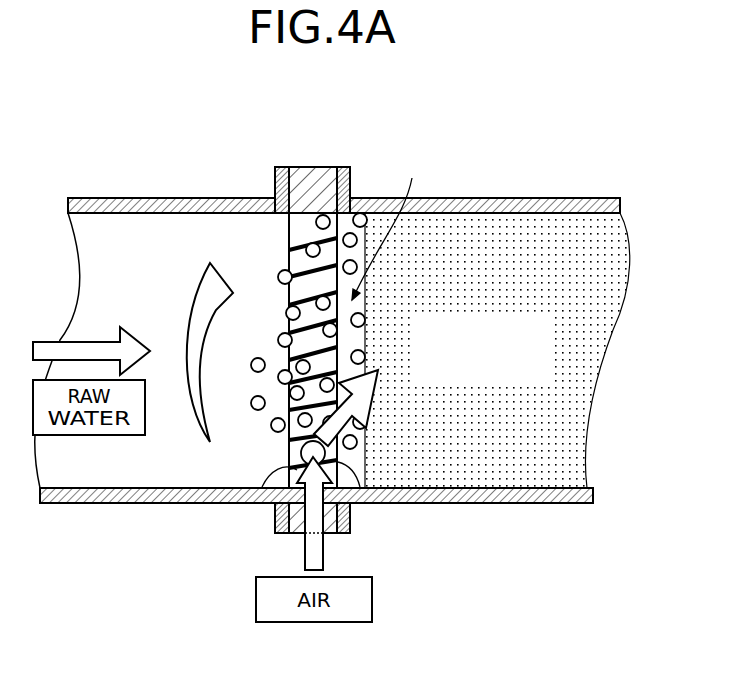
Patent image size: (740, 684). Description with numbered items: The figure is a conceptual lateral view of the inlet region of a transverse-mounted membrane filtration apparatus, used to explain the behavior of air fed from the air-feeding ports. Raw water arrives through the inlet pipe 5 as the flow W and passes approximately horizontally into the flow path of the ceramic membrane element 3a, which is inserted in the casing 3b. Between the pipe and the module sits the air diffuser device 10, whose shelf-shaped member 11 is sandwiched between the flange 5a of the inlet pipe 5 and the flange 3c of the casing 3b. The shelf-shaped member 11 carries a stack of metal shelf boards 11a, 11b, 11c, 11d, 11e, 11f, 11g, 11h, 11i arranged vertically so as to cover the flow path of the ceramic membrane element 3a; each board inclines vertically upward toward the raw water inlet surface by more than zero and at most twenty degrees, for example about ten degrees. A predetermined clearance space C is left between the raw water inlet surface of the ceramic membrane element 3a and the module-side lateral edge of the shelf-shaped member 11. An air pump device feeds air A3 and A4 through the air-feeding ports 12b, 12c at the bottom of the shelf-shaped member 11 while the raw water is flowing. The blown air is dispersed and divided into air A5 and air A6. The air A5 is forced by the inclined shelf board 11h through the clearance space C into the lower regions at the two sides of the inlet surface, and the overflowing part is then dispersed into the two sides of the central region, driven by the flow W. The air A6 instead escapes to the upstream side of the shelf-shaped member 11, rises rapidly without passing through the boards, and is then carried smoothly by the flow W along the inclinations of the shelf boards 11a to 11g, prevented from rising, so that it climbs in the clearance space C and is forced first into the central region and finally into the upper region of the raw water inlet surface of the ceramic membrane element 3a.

The ceramic membrane element 3a is at (549, 476).
The casing 3b is at (510, 198).
The flange 3c is at (343, 167).
The inlet pipe 5 is at (149, 198).
The flange 5a is at (285, 167).
The air diffuser device 10 is at (301, 167).
The shelf-shaped member 11 is at (279, 336).
The shelf board 11a is at (289, 245).
The shelf board 11b is at (289, 272).
The shelf board 11c is at (289, 303).
The shelf board 11d is at (289, 331).
The shelf board 11e is at (289, 357).
The shelf board 11f is at (289, 380).
The shelf board 11g is at (289, 424).
The shelf board 11h is at (289, 455).
The shelf board 11i is at (289, 472).
The air-feeding port 12b is at (392, 518).
The air-feeding port 12c is at (351, 506).
The air A3 is at (379, 529).
The air A4 is at (317, 558).
The air A5 is at (365, 403).
The air A6 is at (192, 445).
The clearance space C is at (385, 228).
The flow W is at (100, 340).